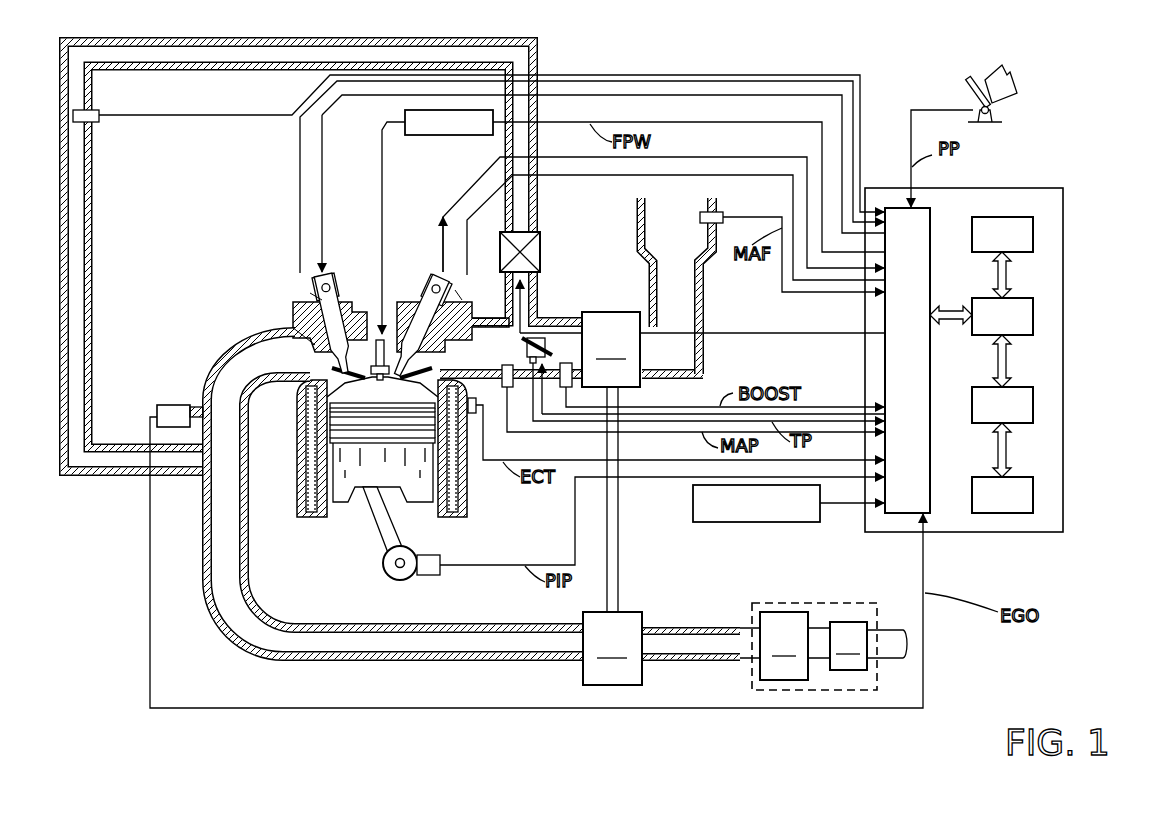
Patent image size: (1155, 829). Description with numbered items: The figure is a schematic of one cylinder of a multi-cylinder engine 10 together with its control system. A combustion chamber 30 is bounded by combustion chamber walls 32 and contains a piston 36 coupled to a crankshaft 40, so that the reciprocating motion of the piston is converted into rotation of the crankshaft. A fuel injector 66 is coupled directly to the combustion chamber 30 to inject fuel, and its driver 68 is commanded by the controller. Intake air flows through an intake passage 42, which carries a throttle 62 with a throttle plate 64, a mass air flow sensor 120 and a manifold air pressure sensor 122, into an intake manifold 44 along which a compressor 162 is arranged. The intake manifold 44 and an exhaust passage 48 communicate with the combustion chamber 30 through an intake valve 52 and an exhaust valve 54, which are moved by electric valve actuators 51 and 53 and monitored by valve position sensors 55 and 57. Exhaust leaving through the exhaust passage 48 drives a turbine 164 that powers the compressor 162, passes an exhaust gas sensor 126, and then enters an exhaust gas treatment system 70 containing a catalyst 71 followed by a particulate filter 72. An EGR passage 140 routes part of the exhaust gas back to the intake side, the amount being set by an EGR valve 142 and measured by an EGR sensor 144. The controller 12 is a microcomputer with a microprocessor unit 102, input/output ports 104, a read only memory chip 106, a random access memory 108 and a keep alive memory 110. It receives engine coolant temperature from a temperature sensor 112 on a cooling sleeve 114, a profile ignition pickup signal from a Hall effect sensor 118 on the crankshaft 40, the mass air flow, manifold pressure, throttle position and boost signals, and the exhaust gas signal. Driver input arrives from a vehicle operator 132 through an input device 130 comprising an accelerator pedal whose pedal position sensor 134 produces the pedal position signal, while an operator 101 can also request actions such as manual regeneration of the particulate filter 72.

The engine 10 is at (236, 258).
The controller 12 is at (1055, 188).
The combustion chamber 30 is at (360, 390).
The combustion chamber walls 32 is at (333, 513).
The piston 36 is at (367, 477).
The crankshaft 40 is at (393, 577).
The intake passage 42 is at (689, 240).
The intake manifold 44 is at (515, 350).
The exhaust passage 48 is at (280, 365).
The electric valve actuator 51 is at (430, 272).
The intake valve 52 is at (420, 371).
The electric valve actuator 53 is at (330, 272).
The exhaust valve 54 is at (292, 327).
The valve position sensor 55 is at (455, 290).
The valve position sensor 57 is at (310, 292).
The throttle 62 is at (532, 338).
The throttle plate 64 is at (545, 350).
The fuel injector 66 is at (381, 340).
The driver 68 is at (470, 135).
The exhaust gas treatment system 70 is at (818, 603).
The catalyst 71 is at (795, 646).
The particulate filter 72 is at (868, 646).
The operator 101 is at (693, 500).
The microprocessor unit 102 is at (1033, 310).
The input/output ports 104 is at (933, 217).
The read only memory chip 106 is at (1033, 232).
The random access memory 108 is at (1033, 400).
The keep alive memory 110 is at (1033, 490).
The temperature sensor 112 is at (478, 415).
The cooling sleeve 114 is at (480, 485).
The Hall effect sensor 118 is at (430, 577).
The mass air flow sensor 120 is at (718, 212).
The manifold air pressure sensor 122 is at (505, 368).
The exhaust gas sensor 126 is at (157, 408).
The input device 130 is at (970, 90).
The vehicle operator 132 is at (1010, 72).
The pedal position sensor 134 is at (1000, 112).
The EGR passage 140 is at (305, 40).
The EGR valve 142 is at (566, 241).
The EGR sensor 144 is at (94, 123).
The compressor 162 is at (611, 349).
The turbine 164 is at (671, 536).